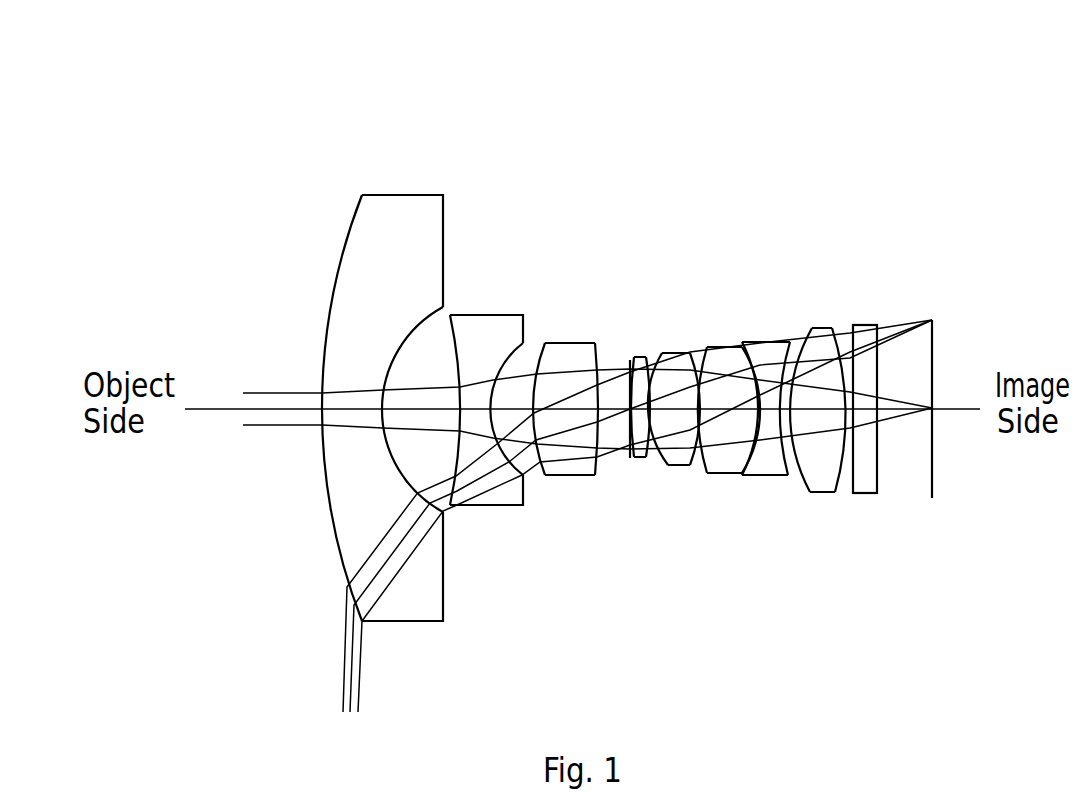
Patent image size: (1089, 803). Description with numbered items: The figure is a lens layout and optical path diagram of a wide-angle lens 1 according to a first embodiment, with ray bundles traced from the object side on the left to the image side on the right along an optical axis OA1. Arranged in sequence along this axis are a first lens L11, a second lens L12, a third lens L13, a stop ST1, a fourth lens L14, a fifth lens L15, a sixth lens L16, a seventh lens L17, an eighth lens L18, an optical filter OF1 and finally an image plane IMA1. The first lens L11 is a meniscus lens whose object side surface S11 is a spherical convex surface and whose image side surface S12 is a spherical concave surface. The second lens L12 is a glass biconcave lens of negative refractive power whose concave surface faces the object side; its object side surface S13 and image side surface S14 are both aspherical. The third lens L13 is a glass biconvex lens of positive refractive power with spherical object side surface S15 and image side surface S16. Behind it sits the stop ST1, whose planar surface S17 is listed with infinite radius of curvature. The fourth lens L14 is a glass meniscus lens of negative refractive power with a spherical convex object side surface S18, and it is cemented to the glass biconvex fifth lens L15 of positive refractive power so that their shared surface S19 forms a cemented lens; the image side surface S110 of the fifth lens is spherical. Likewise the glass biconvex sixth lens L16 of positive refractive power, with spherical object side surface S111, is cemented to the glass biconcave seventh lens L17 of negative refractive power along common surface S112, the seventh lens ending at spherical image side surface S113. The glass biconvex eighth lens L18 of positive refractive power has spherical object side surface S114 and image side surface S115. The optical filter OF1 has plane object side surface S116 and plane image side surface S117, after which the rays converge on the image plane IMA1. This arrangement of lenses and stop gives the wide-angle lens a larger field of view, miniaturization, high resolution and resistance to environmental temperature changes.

The wide-angle lens 1 is at (138, 59).
The optical axis OA1 is at (240, 409).
The first lens L11 is at (401, 195).
The second lens L12 is at (483, 313).
The third lens L13 is at (569, 343).
The stop ST1 is at (630, 358).
The fourth lens L14 is at (641, 357).
The fifth lens L15 is at (672, 352).
The sixth lens L16 is at (716, 347).
The seventh lens L17 is at (758, 342).
The eighth lens L18 is at (816, 328).
The optical filter OF1 is at (863, 325).
The image plane IMA1 is at (932, 320).
The object side surface of the first lens S11 is at (337, 545).
The image side surface of the first lens S12 is at (410, 478).
The object side surface of the second lens S13 is at (458, 466).
The image side surface of the second lens S14 is at (503, 452).
The object side surface of the third lens S15 is at (538, 465).
The image side surface of the third lens S16 is at (578, 476).
The stop surface S17 is at (630, 458).
The object side surface of the fourth lens S18 is at (640, 458).
The cemented surface S19 is at (655, 462).
The image side surface of the fifth lens S110 is at (688, 466).
The object side surface of the sixth lens S111 is at (705, 470).
The cemented surface S112 is at (746, 476).
The image side surface of the seventh lens S113 is at (780, 474).
The object side surface of the eighth lens S114 is at (806, 478).
The image side surface of the eighth lens S115 is at (837, 483).
The object side surface of the optical filter S116 is at (846, 480).
The image side surface of the optical filter S117 is at (878, 480).